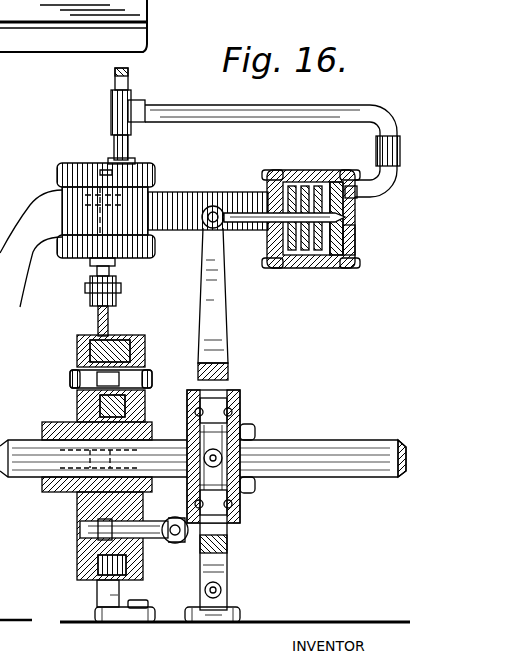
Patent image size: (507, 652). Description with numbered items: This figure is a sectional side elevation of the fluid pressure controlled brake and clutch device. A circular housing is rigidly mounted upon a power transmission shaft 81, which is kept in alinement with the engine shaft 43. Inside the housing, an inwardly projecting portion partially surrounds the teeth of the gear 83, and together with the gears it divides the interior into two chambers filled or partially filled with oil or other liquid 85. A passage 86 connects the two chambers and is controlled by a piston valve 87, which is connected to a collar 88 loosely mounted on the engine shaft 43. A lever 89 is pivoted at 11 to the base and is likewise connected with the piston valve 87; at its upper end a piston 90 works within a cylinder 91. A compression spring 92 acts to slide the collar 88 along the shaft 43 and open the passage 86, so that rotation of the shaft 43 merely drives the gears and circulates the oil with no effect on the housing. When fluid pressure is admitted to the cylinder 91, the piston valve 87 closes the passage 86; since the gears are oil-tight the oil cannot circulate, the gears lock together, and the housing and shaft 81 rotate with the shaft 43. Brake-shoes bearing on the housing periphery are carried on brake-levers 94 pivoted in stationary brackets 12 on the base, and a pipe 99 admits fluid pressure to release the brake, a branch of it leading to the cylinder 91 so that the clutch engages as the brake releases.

The pipe 99 is at (112, 76).
The compression spring 92 is at (305, 178).
The piston 90 is at (322, 266).
The cylinder 91 is at (355, 250).
The lever 89 is at (227, 360).
The engine shaft 43 is at (300, 450).
The collar 88 is at (240, 492).
The power transmission shaft 81 is at (21, 445).
The oil or other liquid 85 is at (76, 361).
The passage 86 is at (78, 565).
The piston valve 87 is at (152, 542).
The stationary bracket 12 is at (97, 601).
The pivot 11 is at (228, 590).
The gear 83 is at (8, 497).
The brake-lever 94 is at (8, 522).